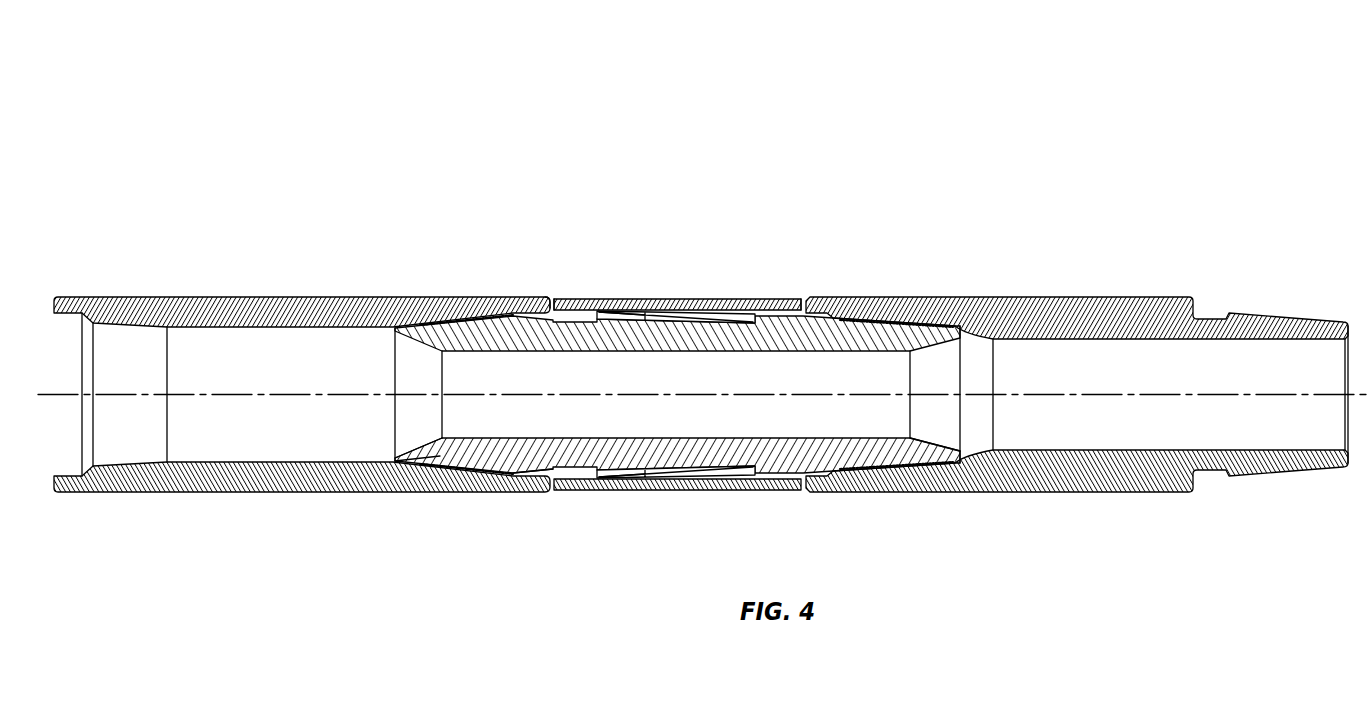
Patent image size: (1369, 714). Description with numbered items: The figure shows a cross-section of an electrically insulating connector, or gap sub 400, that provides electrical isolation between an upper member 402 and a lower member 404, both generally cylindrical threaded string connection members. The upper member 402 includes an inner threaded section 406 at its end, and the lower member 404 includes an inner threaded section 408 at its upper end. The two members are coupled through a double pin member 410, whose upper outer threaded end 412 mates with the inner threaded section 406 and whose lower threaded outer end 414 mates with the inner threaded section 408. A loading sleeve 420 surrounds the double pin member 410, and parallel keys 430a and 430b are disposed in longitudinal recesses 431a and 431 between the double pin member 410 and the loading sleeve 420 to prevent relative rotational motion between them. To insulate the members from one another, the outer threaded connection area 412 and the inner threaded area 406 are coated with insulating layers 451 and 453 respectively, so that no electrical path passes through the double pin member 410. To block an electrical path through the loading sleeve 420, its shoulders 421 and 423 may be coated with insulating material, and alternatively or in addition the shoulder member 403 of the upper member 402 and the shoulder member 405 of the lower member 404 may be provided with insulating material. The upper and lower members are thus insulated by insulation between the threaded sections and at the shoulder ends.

The gap sub 400 is at (236, 66).
The upper member 402 is at (185, 311).
The shoulder member of the upper member 403 is at (552, 298).
The lower member 404 is at (1050, 310).
The shoulder member of the lower member 405 is at (801, 298).
The inner threaded section 406 is at (467, 320).
The inner threaded section 408 is at (852, 468).
The double pin member 410 is at (737, 340).
The upper outer threaded end 412 is at (445, 466).
The lower threaded outer end 414 is at (898, 453).
The loading sleeve 420 is at (638, 298).
The shoulder of the loading sleeve 421 is at (556, 298).
The shoulder of the loading sleeve 423 is at (806, 298).
The key 430a is at (714, 298).
The key 430b is at (647, 489).
The longitudinal recess 431 is at (623, 487).
The longitudinal recess 431a is at (628, 298).
The insulating layer 451 is at (507, 466).
The insulating layer 453 is at (437, 468).